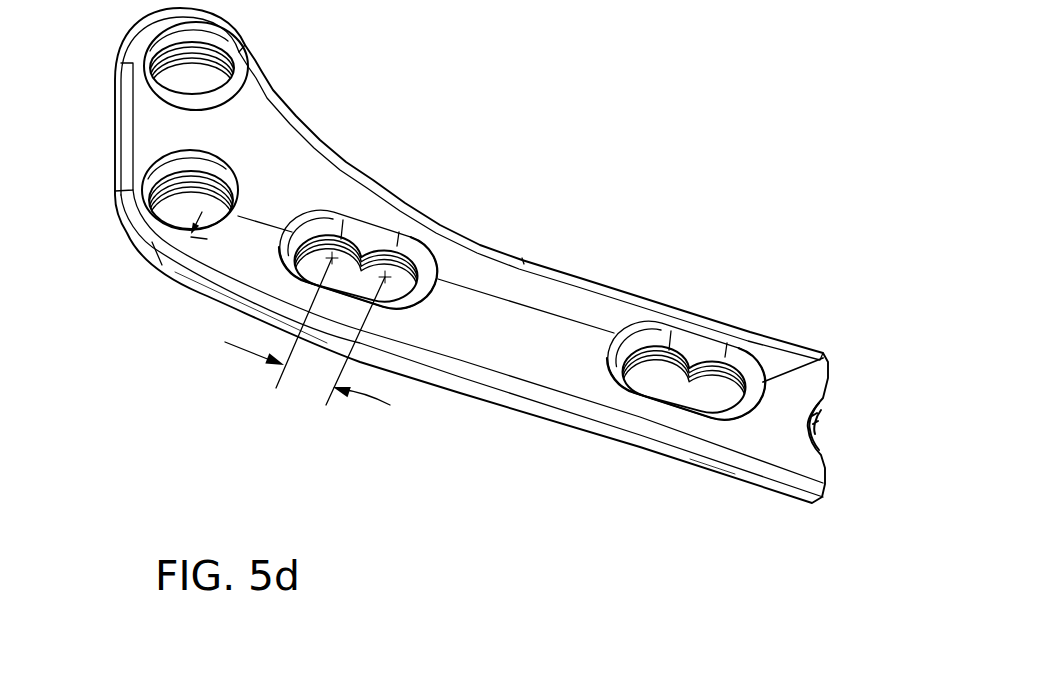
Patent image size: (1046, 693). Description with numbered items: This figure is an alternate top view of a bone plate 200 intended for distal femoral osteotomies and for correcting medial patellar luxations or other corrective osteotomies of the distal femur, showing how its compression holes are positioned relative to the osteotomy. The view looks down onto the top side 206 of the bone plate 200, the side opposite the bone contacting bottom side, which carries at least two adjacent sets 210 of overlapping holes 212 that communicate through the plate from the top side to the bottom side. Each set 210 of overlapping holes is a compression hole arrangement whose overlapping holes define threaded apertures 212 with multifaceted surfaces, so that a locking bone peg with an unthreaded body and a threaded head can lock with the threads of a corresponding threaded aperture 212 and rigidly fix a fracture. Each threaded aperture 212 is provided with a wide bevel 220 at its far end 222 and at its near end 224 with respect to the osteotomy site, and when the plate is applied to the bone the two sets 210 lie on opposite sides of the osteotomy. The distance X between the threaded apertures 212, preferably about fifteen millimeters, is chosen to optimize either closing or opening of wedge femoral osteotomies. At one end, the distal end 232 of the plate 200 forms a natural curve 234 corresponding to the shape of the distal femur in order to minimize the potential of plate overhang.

The bone plate 200 is at (553, 477).
The top side 206 is at (292, 161).
The set of overlapping holes 210 is at (362, 237).
The threaded aperture 212 is at (321, 237).
The wide bevel 220 is at (518, 330).
The far end 222 is at (303, 223).
The near end 224 is at (426, 280).
The distal end 232 is at (155, 128).
The natural curve 234 is at (230, 295).